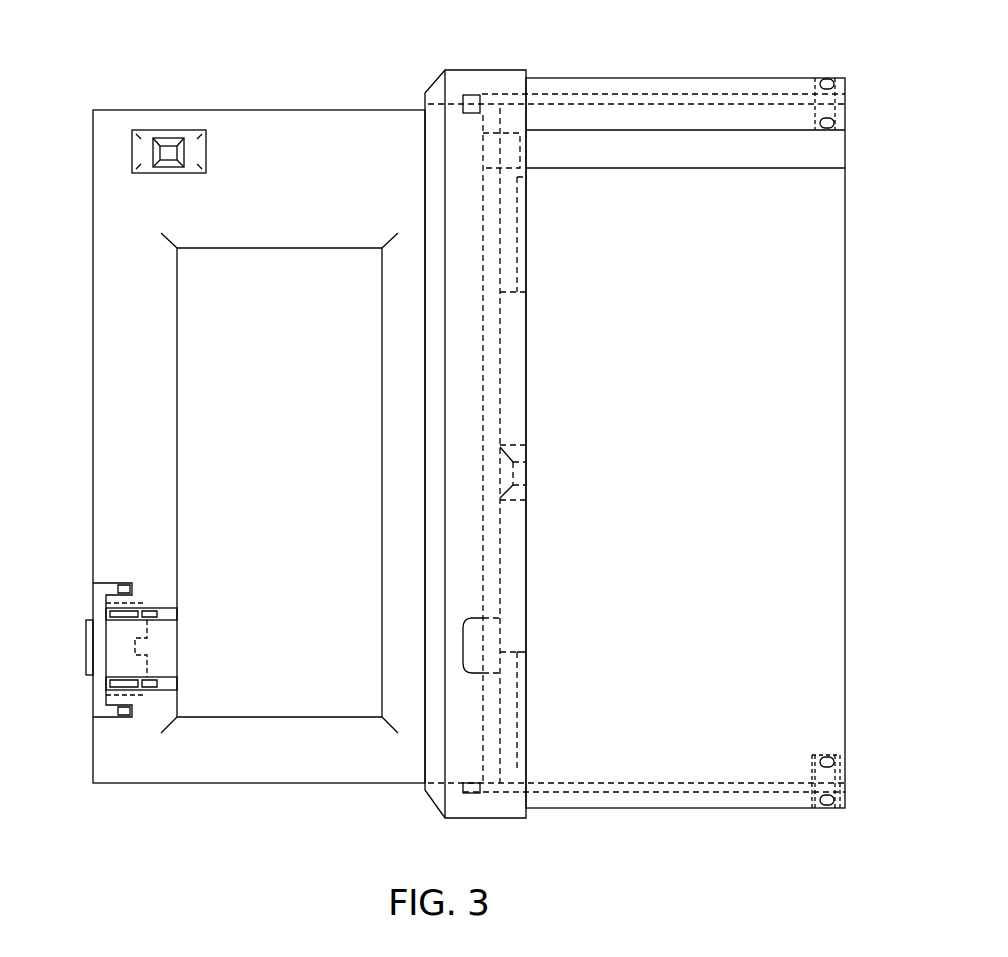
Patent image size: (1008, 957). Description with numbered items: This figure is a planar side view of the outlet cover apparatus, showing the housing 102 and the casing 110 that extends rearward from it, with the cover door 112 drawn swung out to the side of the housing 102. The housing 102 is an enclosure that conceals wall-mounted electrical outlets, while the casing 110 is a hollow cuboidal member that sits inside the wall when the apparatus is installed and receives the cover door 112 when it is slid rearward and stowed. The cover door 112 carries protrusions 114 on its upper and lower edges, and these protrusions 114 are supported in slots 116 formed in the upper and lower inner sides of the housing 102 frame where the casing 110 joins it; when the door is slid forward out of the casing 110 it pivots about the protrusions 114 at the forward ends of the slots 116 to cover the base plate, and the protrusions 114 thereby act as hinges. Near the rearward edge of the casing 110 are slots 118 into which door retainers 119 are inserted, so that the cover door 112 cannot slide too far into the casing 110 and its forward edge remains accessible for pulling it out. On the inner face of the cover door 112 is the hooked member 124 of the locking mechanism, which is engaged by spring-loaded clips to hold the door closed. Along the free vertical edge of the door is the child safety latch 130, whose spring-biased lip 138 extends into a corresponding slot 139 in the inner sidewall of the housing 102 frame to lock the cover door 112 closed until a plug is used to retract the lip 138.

The housing 102 is at (487, 70).
The casing 110 is at (847, 442).
The cover door 112 is at (258, 110).
The protrusions 114 is at (468, 80).
The slots 116 is at (672, 100).
The slots 118 is at (836, 80).
The door retainers 119 is at (836, 120).
The hooked member 124 is at (132, 153).
The child safety latch 130 is at (118, 667).
The lip 138 is at (86, 645).
The slot 139 is at (472, 673).